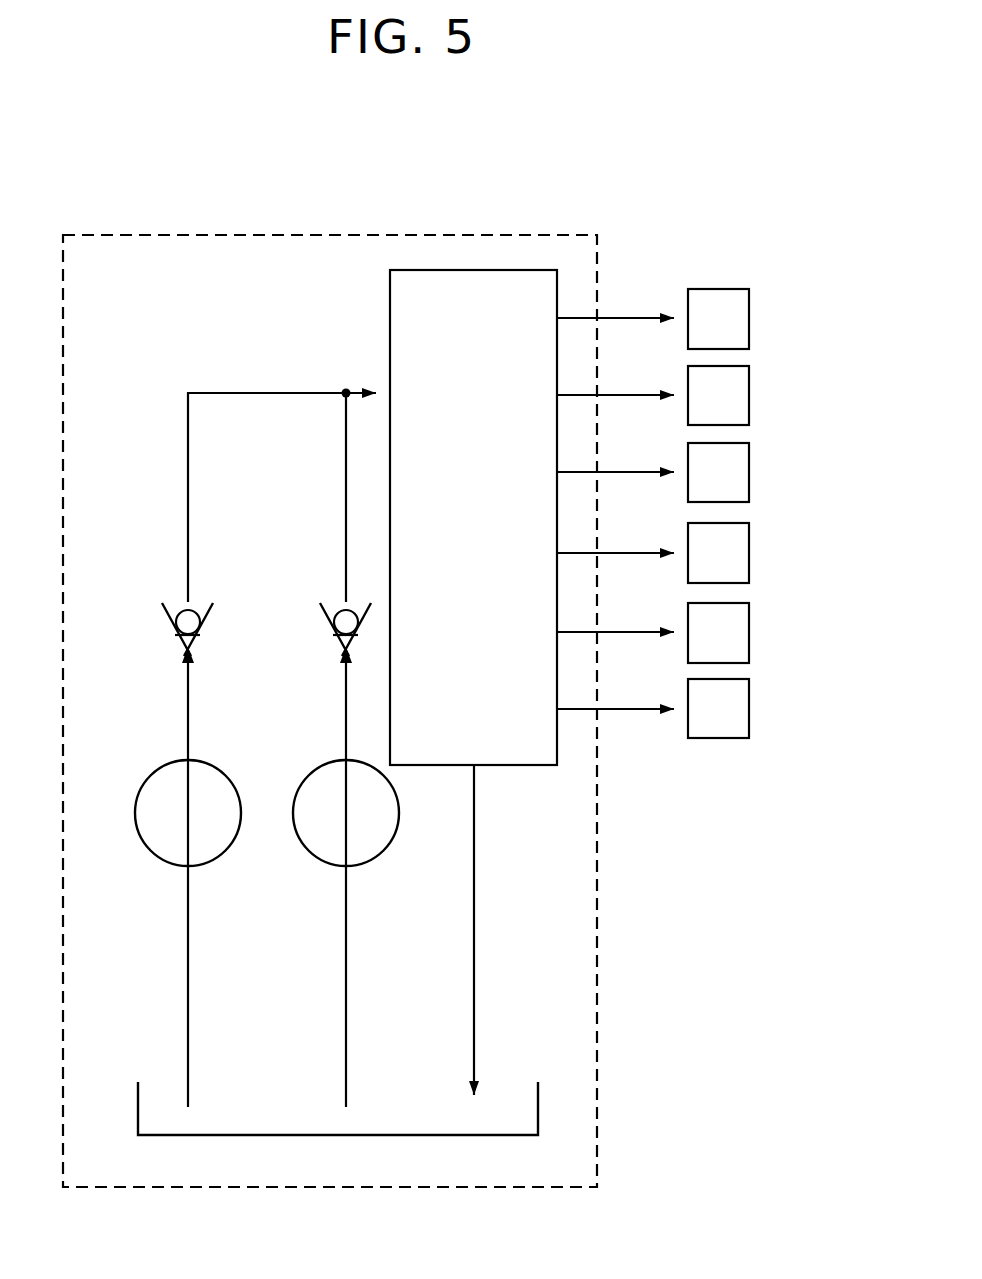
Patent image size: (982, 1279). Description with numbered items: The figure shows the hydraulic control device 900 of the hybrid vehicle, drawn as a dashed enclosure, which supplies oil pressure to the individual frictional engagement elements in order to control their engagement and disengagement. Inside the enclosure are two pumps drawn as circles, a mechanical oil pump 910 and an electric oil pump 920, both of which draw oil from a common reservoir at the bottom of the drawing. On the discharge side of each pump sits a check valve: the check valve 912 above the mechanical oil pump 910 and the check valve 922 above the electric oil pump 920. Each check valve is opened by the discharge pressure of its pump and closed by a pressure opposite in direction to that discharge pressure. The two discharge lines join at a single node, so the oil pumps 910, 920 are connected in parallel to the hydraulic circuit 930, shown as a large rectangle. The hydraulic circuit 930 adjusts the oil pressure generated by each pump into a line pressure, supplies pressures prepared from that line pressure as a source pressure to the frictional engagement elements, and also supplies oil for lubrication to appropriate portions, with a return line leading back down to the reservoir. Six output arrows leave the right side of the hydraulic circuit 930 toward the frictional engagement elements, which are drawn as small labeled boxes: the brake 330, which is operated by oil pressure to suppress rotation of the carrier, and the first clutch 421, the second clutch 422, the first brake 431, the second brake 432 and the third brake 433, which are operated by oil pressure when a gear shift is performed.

The hydraulic control device 900 is at (353, 233).
The hydraulic circuit 930 is at (517, 766).
The mechanical oil pump 910 is at (313, 856).
The electric oil pump 920 is at (153, 856).
The check valve 912 is at (340, 610).
The check valve 922 is at (182, 610).
The brake 330 is at (750, 311).
The C1 clutch 421 is at (750, 388).
The C2 clutch 422 is at (750, 465).
The B1 brake 431 is at (750, 545).
The B2 brake 432 is at (750, 625).
The B3 brake 433 is at (750, 701).